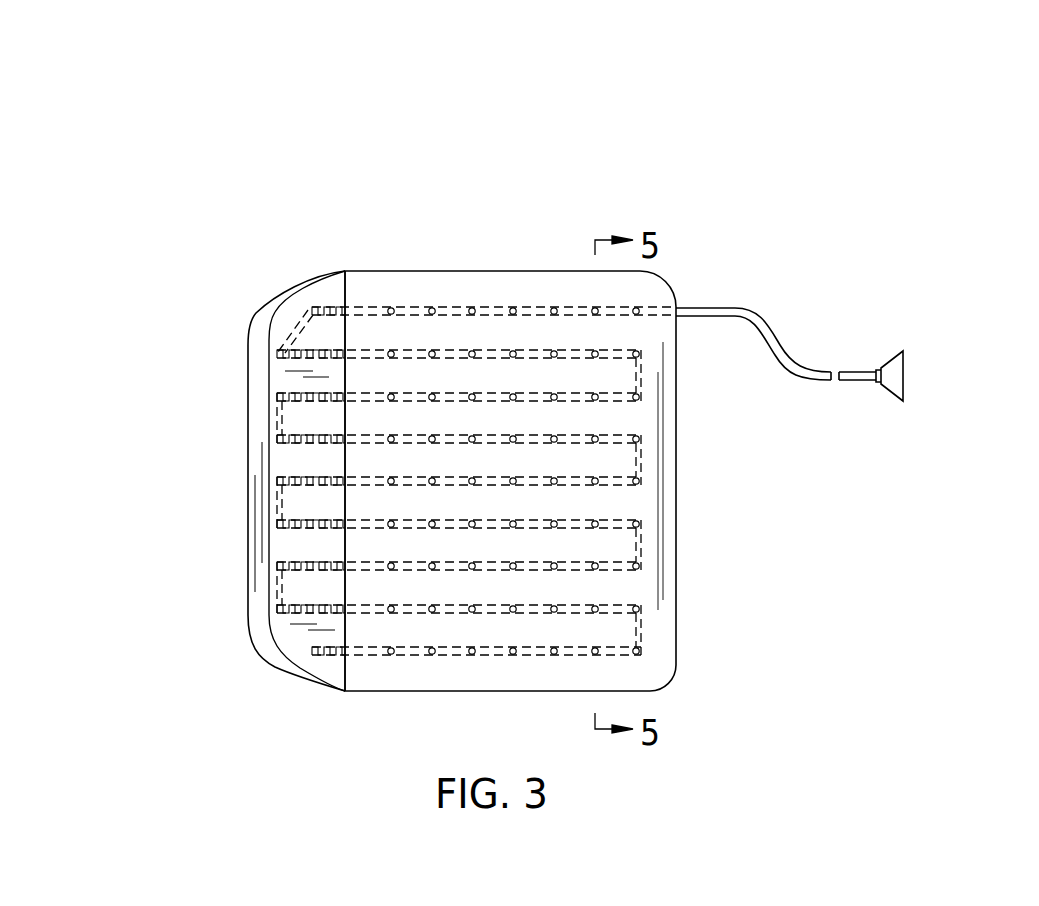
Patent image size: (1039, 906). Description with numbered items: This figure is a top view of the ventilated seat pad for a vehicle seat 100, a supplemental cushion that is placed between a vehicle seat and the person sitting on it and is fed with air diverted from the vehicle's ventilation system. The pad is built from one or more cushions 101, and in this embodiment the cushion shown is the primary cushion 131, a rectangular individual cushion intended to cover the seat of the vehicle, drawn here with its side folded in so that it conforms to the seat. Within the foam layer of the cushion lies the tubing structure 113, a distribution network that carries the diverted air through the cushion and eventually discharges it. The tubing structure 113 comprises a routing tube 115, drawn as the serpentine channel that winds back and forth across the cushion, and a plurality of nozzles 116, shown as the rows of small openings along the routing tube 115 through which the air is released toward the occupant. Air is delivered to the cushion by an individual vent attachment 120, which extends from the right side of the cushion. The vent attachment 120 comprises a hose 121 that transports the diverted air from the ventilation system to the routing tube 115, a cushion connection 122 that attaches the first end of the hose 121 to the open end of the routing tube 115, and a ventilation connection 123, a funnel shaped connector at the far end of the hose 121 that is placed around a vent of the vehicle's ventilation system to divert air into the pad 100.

The ventilated seat pad for a vehicle seat 100 is at (165, 176).
The one or more cushions 101 is at (665, 678).
The tubing structure 113 is at (660, 631).
The routing tube 115 is at (452, 300).
The plurality of nozzles 116 is at (553, 312).
The individual vent attachment 120 is at (783, 360).
The hose 121 is at (855, 381).
The cushion connection 122 is at (678, 310).
The ventilation connection 123 is at (903, 378).
The primary cushion 131 is at (383, 290).